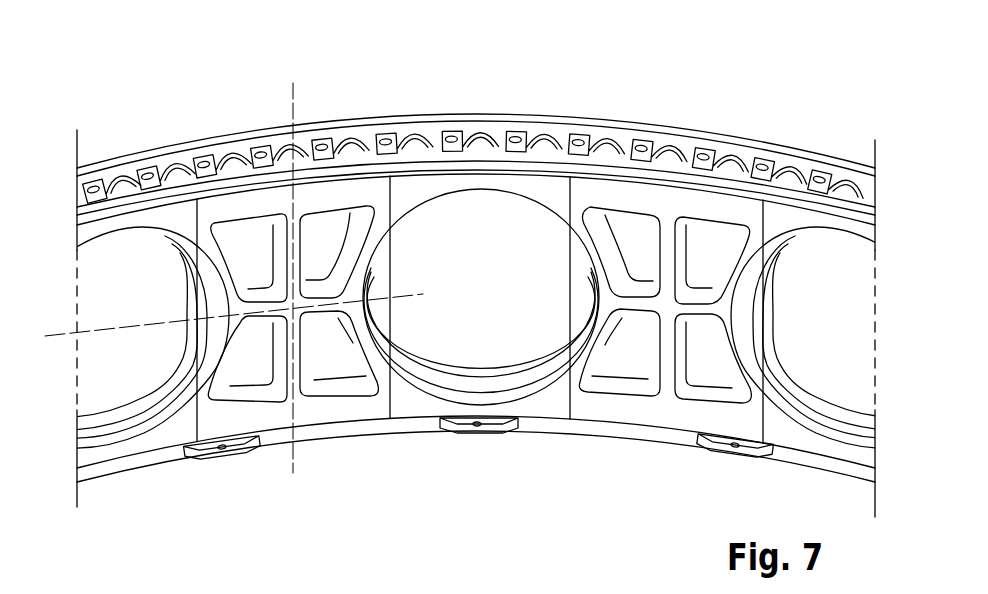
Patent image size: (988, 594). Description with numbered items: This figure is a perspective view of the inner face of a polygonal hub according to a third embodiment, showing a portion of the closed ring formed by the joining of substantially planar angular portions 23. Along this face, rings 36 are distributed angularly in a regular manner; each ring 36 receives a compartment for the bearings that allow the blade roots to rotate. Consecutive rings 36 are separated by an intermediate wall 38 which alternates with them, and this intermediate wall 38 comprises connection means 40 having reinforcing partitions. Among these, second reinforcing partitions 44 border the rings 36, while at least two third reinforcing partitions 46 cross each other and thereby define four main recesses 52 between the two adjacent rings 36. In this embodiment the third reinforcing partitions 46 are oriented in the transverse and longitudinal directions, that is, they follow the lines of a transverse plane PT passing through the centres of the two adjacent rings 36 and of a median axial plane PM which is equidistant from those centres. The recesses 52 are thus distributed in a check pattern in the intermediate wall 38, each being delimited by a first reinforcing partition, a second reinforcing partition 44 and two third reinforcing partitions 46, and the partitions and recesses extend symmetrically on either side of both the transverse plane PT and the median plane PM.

The angular portion 23 is at (127, 474).
The ring 36 is at (115, 408).
The intermediate wall 38 is at (240, 203).
The connection means 40 is at (354, 183).
The second reinforcing partition 44 is at (224, 276).
The third reinforcing partition 46 is at (316, 306).
The main recess 52 is at (352, 365).
The median axial plane PM is at (291, 97).
The transverse plane PT is at (61, 333).